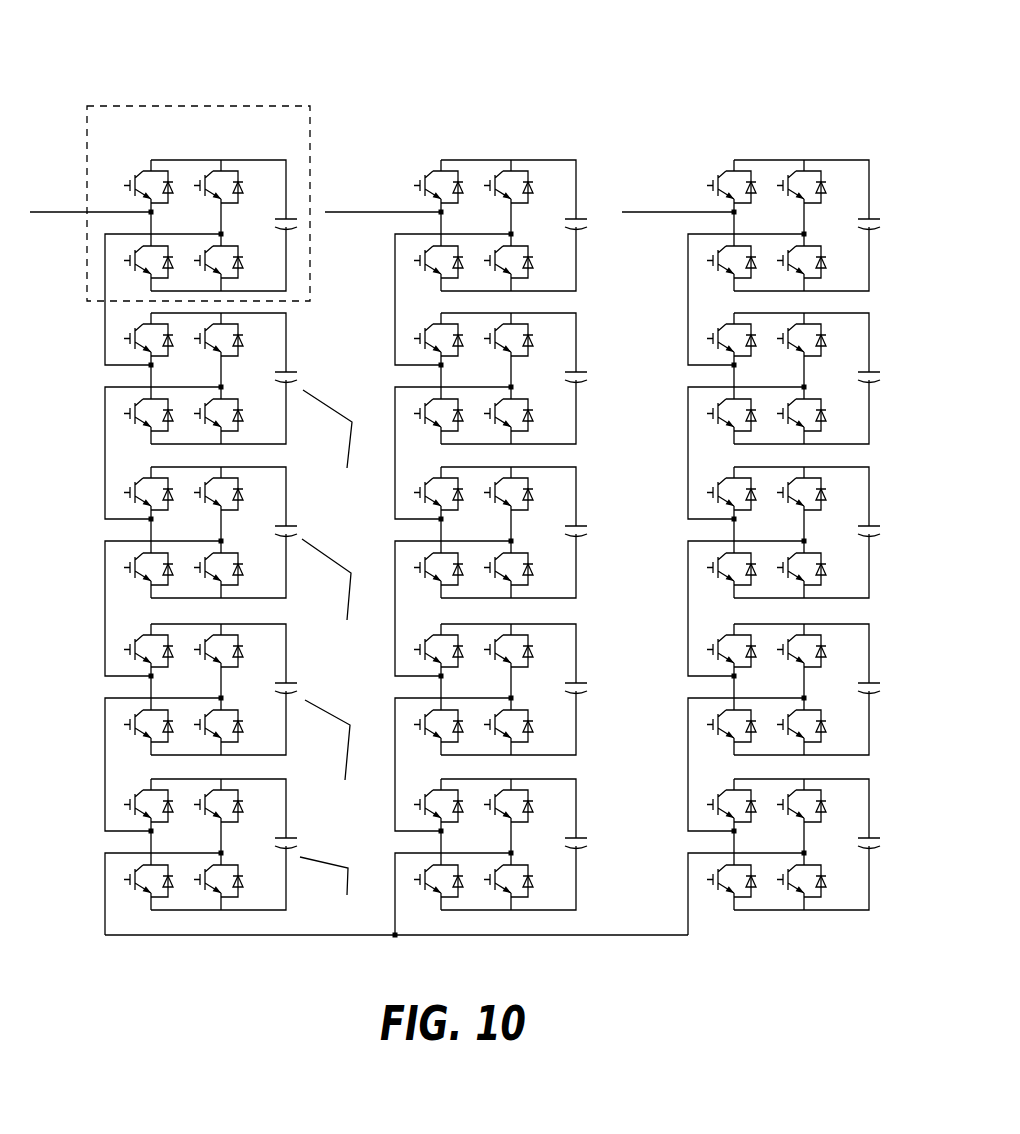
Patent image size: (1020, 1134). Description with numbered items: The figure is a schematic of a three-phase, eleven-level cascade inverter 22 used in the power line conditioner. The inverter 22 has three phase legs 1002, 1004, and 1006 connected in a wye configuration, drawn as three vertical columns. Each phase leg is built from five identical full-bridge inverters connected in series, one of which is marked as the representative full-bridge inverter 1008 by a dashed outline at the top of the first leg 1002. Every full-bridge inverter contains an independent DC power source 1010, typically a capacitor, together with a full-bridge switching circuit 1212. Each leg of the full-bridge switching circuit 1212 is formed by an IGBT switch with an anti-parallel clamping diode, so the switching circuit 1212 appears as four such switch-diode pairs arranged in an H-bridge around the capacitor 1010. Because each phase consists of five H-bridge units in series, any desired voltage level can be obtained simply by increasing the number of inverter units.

The cascade inverter 22 is at (443, 67).
The phase leg 1002 is at (222, 86).
The phase leg 1004 is at (475, 125).
The phase leg 1006 is at (752, 141).
The full-bridge inverter 1008 is at (105, 105).
The independent DC power source 1010 is at (299, 237).
The full-bridge switching circuit 1212 is at (262, 203).